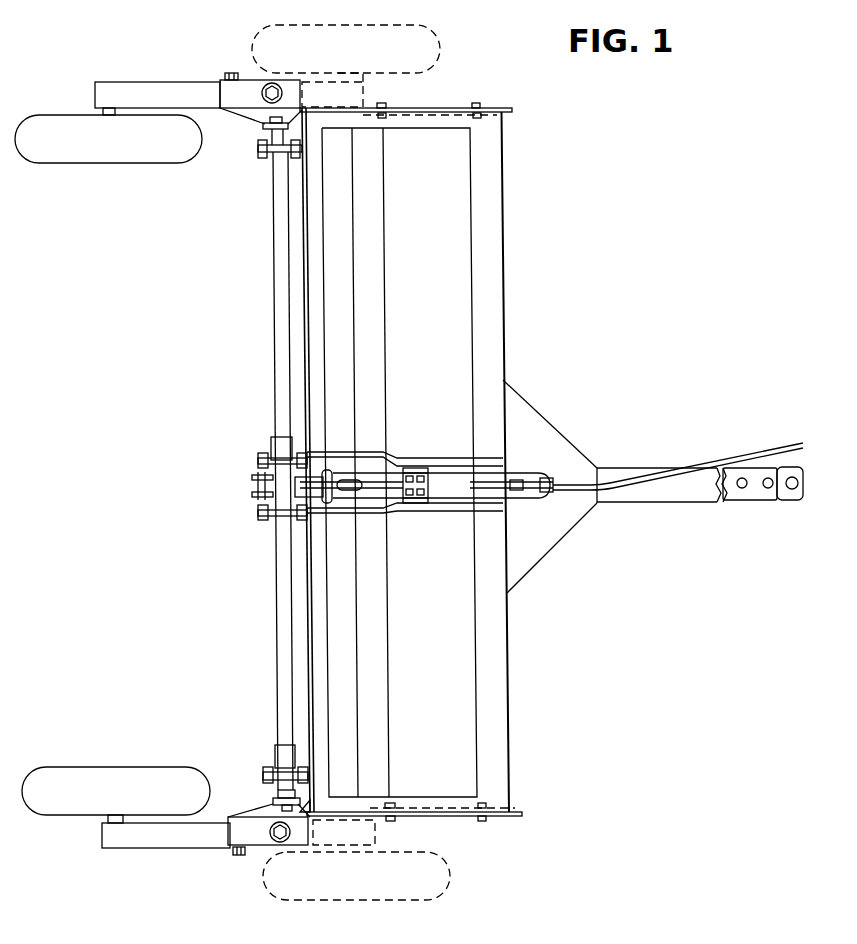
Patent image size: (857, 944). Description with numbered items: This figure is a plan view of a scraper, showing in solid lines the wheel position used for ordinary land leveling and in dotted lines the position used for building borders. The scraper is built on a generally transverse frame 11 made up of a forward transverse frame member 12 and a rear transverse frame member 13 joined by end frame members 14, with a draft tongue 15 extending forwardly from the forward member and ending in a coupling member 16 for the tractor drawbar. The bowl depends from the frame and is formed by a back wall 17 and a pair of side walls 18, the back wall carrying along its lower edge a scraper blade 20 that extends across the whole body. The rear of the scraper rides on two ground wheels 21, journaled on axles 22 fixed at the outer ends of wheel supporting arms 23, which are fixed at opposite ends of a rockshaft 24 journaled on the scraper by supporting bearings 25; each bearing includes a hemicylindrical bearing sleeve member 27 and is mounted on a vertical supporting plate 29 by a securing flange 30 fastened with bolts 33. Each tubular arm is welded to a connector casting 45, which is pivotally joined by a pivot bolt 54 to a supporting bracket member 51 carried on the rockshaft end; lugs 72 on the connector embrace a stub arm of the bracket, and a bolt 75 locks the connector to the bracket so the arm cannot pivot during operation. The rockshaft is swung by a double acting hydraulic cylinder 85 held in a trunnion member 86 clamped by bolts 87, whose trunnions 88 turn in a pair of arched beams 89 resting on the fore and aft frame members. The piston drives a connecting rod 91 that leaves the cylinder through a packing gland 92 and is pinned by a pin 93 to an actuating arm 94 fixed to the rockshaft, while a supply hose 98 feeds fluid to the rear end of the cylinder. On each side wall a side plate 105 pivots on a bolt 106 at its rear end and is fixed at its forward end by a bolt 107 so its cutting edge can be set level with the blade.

The transverse frame 11 is at (446, 467).
The forward transverse frame member 12 is at (493, 242).
The rear transverse frame member 13 is at (315, 281).
The end frame member 14 is at (429, 128).
The draft tongue 15 is at (668, 489).
The coupling member 16 is at (793, 500).
The back wall 17 is at (345, 341).
The side wall 18 is at (453, 108).
The scraper blade 20 is at (388, 590).
The ground wheel 21 is at (150, 140).
The axle 22 is at (103, 110).
The wheel supporting arm 23 is at (150, 90).
The rockshaft 24 is at (280, 355).
The supporting bearing 25 is at (249, 166).
The hemicylindrical bearing sleeve member 27 is at (445, 48).
The vertical supporting plate 29 is at (258, 148).
The securing flange 30 is at (275, 134).
The bolt 33 is at (304, 158).
The connector casting 45 is at (246, 75).
The supporting bracket member 51 is at (308, 105).
The pivot bolt 54 is at (276, 88).
The lug 72 is at (273, 798).
The bolt 75 is at (228, 73).
The double acting hydraulic cylinder 85 is at (520, 472).
The trunnion member 86 is at (427, 470).
The bolt 87 is at (412, 503).
The trunnion 88 is at (413, 468).
The arched beam 89 is at (455, 457).
The connecting rod 91 is at (282, 486).
The packing gland 92 is at (307, 484).
The pin 93 is at (253, 500).
The actuating arm 94 is at (253, 478).
The supply hose 98 is at (613, 478).
The side plate 105 is at (510, 113).
The bolt 106 is at (397, 819).
The bolt 107 is at (478, 103).